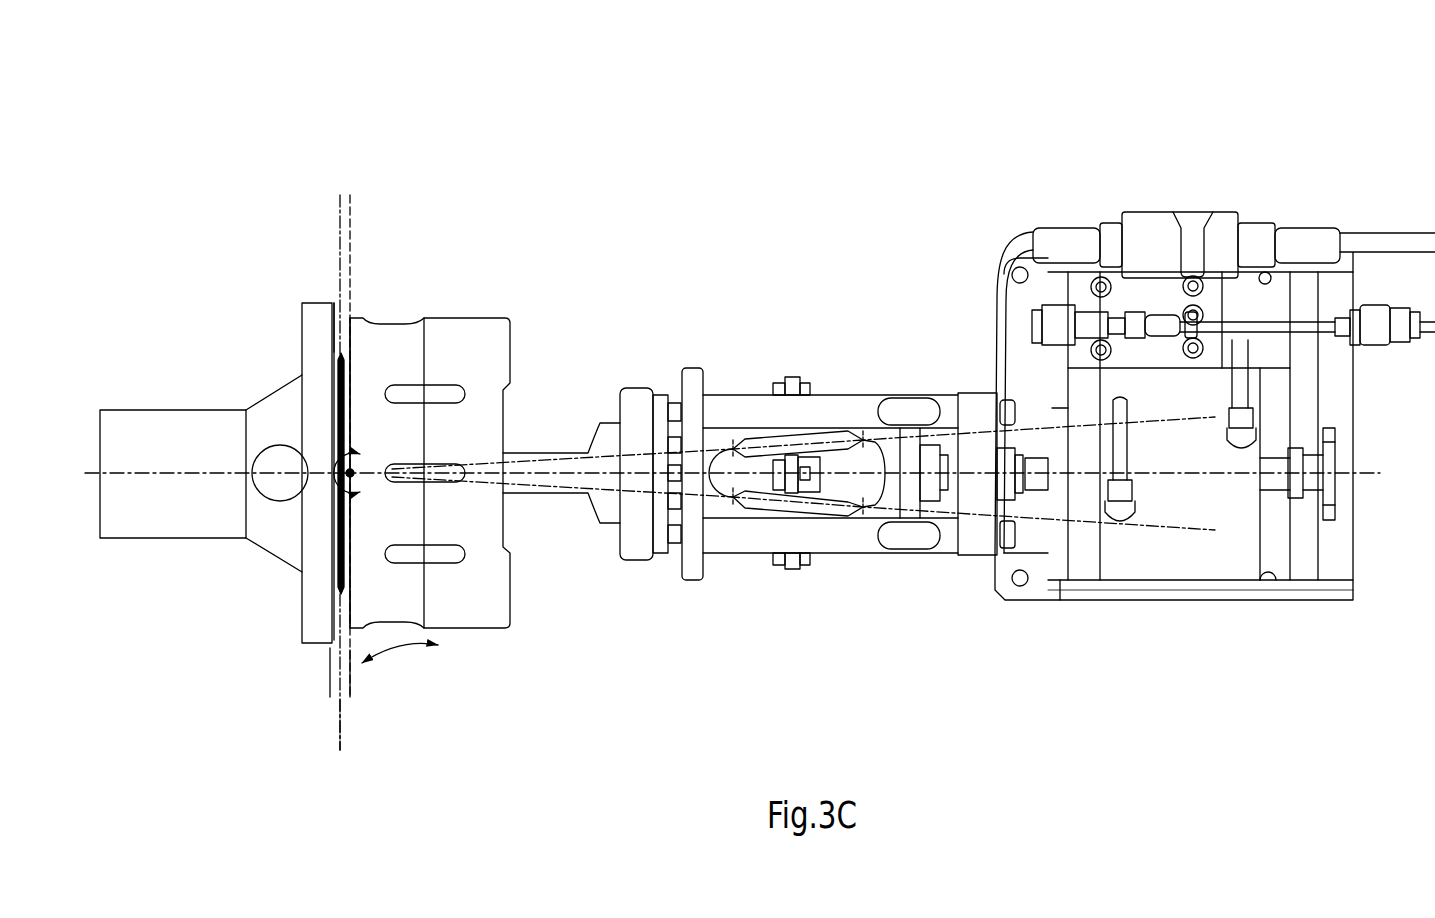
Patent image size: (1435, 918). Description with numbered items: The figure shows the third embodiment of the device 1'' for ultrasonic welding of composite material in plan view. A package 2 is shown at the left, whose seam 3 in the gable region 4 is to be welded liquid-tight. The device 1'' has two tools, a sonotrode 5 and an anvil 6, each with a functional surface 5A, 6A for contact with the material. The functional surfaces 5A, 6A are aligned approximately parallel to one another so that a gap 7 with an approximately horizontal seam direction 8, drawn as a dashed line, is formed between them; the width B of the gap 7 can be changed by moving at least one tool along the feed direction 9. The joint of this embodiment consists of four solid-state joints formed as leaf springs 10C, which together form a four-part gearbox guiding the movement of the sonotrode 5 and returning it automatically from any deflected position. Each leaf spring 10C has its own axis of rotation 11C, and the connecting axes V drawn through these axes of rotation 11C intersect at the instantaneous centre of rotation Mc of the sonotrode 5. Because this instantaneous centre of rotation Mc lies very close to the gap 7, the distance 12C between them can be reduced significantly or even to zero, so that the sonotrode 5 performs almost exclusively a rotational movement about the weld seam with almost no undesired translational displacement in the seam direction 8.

The device 1'' is at (1215, 314).
The package 2 is at (182, 520).
The seam 3 is at (343, 435).
The gable region 4 is at (283, 538).
The sonotrode 5 is at (492, 355).
The functional surface 5A is at (348, 313).
The anvil 6 is at (315, 358).
The functional surface 6A is at (337, 305).
The gap 7 is at (332, 332).
The seam direction 8 is at (338, 718).
The feed direction 9 is at (664, 586).
The leaf spring 10C is at (733, 449).
The axis of rotation 11C is at (733, 449).
The distance 12C is at (380, 203).
The width B is at (380, 688).
The instantaneous centre of rotation Mc is at (360, 486).
The connecting axis V is at (1160, 422).